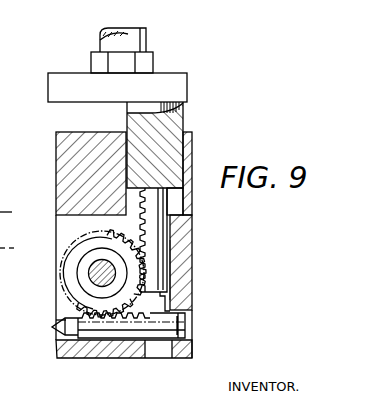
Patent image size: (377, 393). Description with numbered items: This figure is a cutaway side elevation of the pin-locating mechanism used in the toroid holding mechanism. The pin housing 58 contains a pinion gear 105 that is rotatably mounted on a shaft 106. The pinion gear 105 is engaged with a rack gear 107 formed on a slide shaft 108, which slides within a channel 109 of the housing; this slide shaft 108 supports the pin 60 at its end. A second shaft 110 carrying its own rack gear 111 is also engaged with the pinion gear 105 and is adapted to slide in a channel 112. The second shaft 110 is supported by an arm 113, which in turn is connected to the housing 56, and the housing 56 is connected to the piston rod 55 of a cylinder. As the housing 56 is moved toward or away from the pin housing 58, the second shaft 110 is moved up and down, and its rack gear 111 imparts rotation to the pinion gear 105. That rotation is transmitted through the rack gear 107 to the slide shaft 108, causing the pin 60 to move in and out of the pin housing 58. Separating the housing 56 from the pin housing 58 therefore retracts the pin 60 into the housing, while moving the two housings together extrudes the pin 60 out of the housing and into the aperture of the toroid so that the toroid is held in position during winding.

The piston rod 55 is at (147, 36).
The housing 56 is at (188, 84).
The arm 113 is at (185, 124).
The pin housing 58 is at (192, 228).
The pinion gear 105 is at (58, 280).
The shaft 106 is at (82, 289).
The rack gear 111 is at (152, 244).
The second shaft 110 is at (172, 281).
The channel 112 is at (167, 309).
The channel 109 is at (192, 346).
The rack gear 107 is at (126, 320).
The slide shaft 108 is at (89, 342).
The pin 60 is at (53, 329).